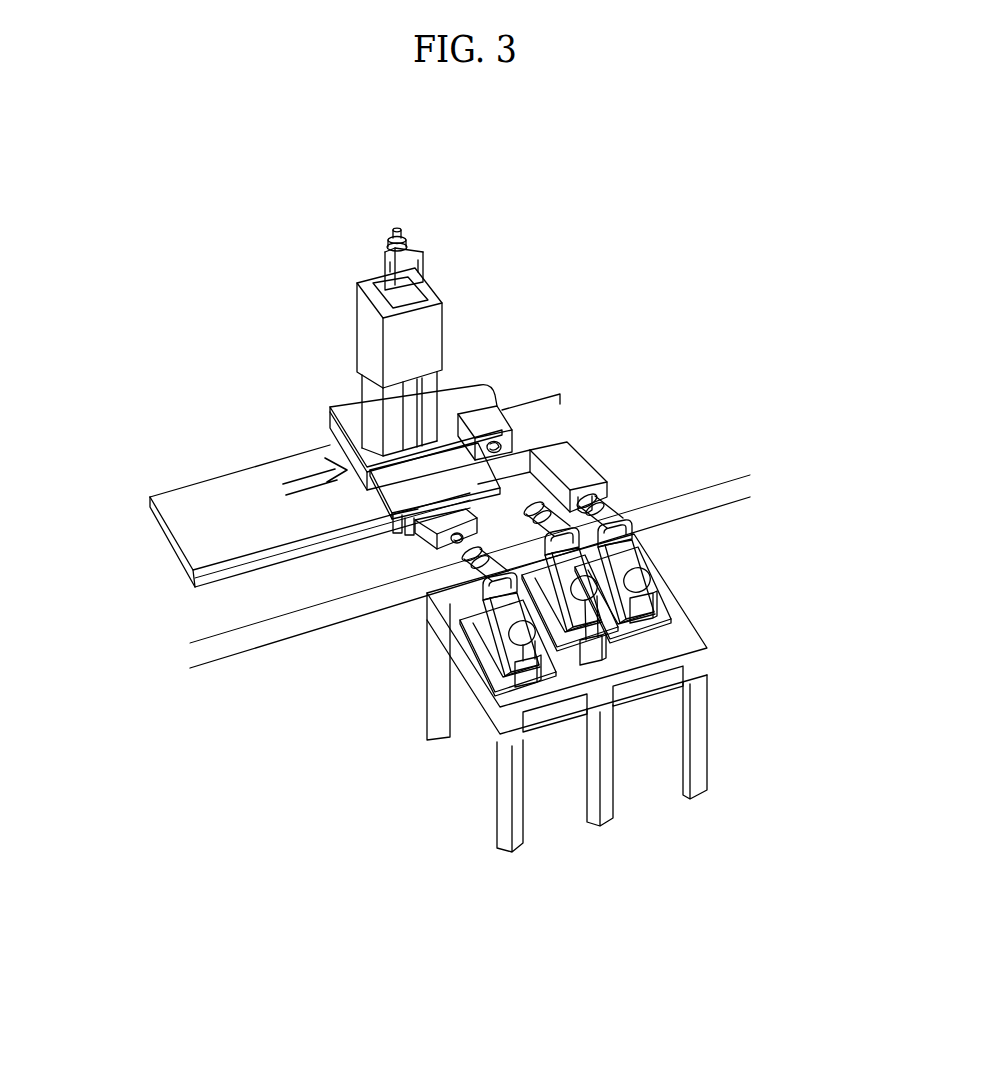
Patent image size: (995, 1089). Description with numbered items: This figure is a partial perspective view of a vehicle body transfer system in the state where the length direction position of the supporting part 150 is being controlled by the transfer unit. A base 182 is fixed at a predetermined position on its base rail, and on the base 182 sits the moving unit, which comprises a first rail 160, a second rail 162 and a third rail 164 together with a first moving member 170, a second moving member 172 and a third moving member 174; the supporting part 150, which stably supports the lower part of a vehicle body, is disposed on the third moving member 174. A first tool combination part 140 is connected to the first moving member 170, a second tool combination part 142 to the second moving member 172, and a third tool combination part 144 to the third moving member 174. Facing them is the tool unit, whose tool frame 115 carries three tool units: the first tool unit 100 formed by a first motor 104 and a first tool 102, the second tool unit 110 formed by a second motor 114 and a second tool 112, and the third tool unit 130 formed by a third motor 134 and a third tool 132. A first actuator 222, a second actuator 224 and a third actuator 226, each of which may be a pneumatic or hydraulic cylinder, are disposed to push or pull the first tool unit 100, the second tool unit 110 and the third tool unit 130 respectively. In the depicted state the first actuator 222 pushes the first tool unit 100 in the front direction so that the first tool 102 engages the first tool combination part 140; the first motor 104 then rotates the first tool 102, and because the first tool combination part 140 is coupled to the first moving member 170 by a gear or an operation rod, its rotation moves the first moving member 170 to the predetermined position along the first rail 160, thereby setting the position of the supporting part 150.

The first tool unit 100 is at (692, 567).
The first tool 102 is at (594, 508).
The first motor 104 is at (623, 553).
The second tool unit 110 is at (409, 630).
The second tool 112 is at (464, 560).
The second motor 114 is at (473, 621).
The tool frame 115 is at (474, 679).
The third tool unit 130 is at (577, 723).
The third tool 132 is at (528, 530).
The third motor 134 is at (556, 552).
The first tool combination part 140 is at (588, 497).
The second tool combination part 142 is at (478, 531).
The third tool combination part 144 is at (497, 444).
The supporting part 150 is at (385, 228).
The first rail 160 is at (200, 497).
The second rail 162 is at (347, 410).
The third rail 164 is at (428, 408).
The first moving member 170 is at (413, 533).
The second moving member 172 is at (355, 432).
The third moving member 174 is at (368, 332).
The base 182 is at (228, 604).
The first actuator 222 is at (658, 614).
The second actuator 224 is at (517, 683).
The third actuator 226 is at (603, 658).